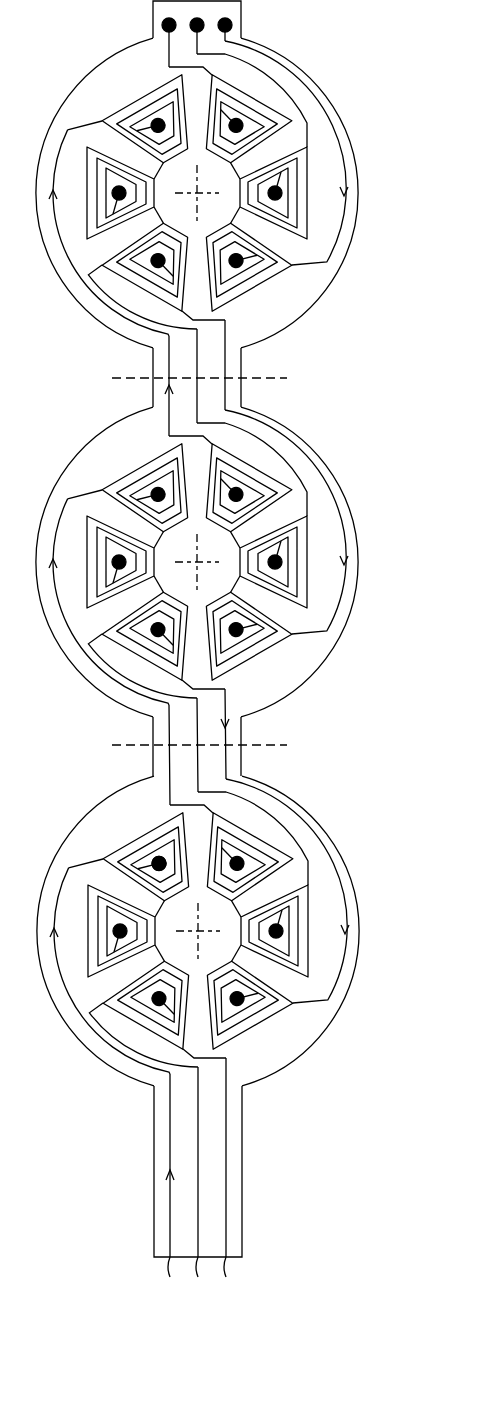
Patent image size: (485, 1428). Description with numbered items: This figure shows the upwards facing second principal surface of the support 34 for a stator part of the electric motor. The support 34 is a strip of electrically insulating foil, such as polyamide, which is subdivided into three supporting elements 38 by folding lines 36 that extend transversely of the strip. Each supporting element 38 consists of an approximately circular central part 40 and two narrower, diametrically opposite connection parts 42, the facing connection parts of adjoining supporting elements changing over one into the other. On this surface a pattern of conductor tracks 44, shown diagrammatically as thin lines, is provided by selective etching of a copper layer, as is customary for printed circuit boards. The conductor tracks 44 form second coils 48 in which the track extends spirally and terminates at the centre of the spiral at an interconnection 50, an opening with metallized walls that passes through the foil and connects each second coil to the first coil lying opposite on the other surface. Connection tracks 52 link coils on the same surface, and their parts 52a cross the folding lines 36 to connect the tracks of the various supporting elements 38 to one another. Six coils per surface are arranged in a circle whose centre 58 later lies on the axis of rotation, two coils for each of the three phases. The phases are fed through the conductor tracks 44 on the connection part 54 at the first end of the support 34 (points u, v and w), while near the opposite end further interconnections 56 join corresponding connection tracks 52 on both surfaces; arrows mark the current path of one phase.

The support 34 is at (322, 1047).
The folding lines 36 is at (270, 373).
The supporting element 38 is at (329, 116).
The central part 40 is at (68, 480).
The connection parts 42 is at (153, 388).
The conductor tracks 44 is at (172, 1184).
The second coils 48 is at (233, 930).
The interconnection 50 is at (118, 821).
The connection tracks 52 is at (310, 891).
The connection elements 52a is at (200, 713).
The connection part 54 is at (238, 1231).
The further interconnections 56 is at (161, 25).
The centre 58 is at (131, 981).